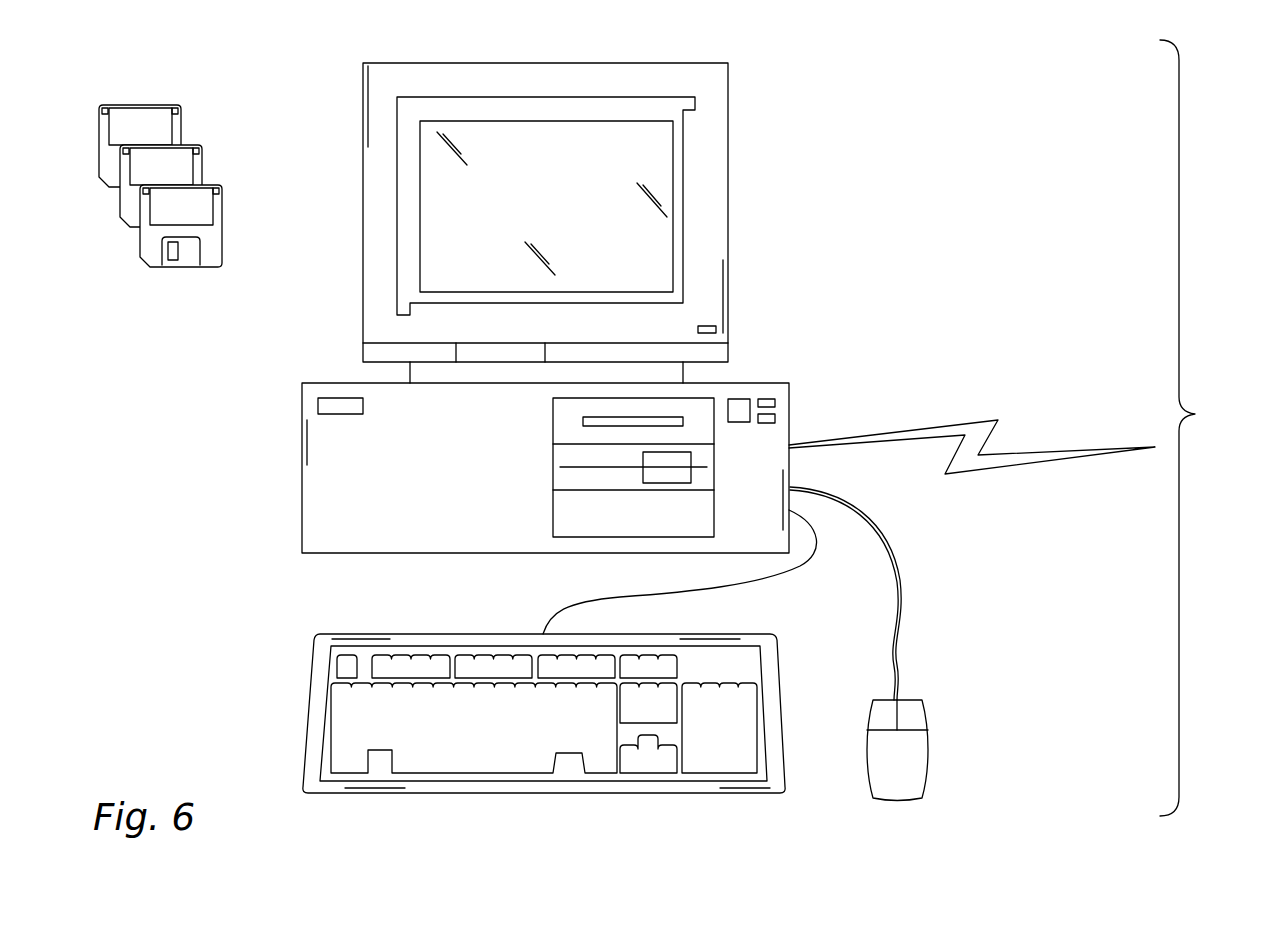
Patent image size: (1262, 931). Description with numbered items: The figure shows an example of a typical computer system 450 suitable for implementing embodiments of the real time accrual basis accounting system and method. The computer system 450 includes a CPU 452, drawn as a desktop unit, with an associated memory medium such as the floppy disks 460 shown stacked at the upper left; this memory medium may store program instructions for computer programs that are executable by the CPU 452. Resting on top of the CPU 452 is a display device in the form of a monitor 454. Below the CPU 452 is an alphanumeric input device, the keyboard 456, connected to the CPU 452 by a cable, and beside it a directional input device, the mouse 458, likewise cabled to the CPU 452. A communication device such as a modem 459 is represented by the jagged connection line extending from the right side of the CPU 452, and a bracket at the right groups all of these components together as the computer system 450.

The computer system 450 is at (1206, 428).
The CPU 452 is at (462, 489).
The monitor 454 is at (571, 213).
The keyboard 456 is at (560, 674).
The mouse 458 is at (859, 665).
The modem 459 is at (972, 466).
The floppy disks 460 is at (160, 205).